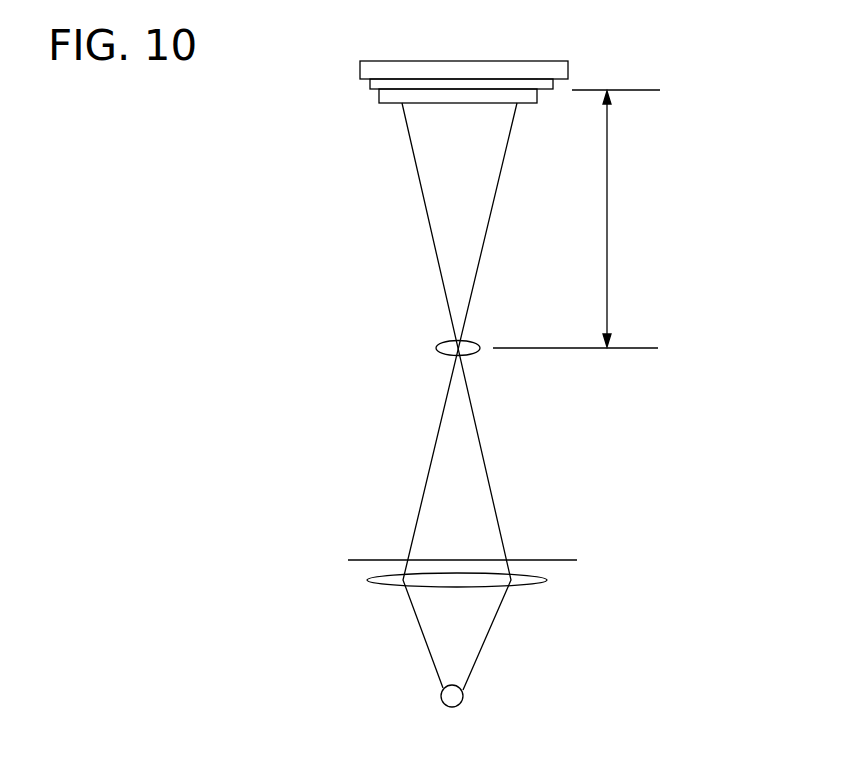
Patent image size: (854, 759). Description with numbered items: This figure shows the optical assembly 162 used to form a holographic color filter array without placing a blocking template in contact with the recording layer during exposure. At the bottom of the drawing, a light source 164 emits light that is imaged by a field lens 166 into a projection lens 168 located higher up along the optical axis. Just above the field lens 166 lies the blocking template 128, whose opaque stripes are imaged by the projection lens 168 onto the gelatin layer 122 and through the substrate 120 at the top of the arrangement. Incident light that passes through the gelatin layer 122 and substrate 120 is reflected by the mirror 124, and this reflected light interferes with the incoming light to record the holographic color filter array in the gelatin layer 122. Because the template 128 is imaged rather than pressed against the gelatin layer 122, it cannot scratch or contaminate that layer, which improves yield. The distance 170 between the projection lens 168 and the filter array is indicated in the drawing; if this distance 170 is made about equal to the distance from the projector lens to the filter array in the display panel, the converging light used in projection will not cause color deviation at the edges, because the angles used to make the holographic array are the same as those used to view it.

The mirror 124 is at (360, 70).
The gelatin layer 122 is at (370, 87).
The substrate 120 is at (379, 94).
The projection lens 168 is at (436, 345).
The distance 170 is at (607, 203).
The optical assembly 162 is at (637, 437).
The blocking template 128 is at (540, 558).
The field lens 166 is at (530, 573).
The light source 164 is at (463, 699).